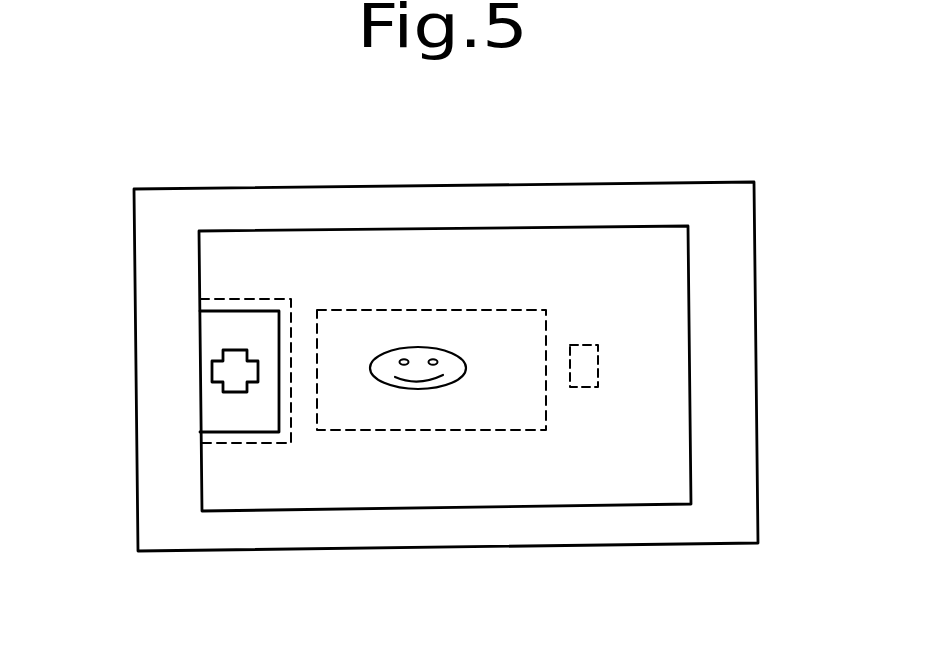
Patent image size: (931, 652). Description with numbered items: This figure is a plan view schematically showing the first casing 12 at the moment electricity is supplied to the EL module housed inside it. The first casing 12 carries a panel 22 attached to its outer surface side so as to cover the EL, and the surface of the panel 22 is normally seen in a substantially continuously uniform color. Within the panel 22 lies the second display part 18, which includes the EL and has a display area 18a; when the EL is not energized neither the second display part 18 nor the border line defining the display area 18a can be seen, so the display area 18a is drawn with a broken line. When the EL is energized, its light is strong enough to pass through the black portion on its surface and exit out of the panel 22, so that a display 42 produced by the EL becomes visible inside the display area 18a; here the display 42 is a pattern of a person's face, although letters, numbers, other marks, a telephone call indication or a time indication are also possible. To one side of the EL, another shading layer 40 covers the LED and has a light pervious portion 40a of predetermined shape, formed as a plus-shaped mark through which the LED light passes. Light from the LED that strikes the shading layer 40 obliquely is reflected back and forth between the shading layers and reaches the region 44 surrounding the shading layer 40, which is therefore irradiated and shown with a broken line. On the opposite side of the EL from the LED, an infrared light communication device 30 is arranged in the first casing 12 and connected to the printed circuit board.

The first casing 12 is at (578, 195).
The panel 22 is at (637, 245).
The display area 18a is at (355, 308).
The second display part 18 is at (397, 288).
The display 42 is at (420, 347).
The infrared light communication device 30 is at (598, 362).
The region around the shading layer 44 is at (234, 443).
The shading layer 40 is at (232, 332).
The light pervious portion 40a is at (232, 371).